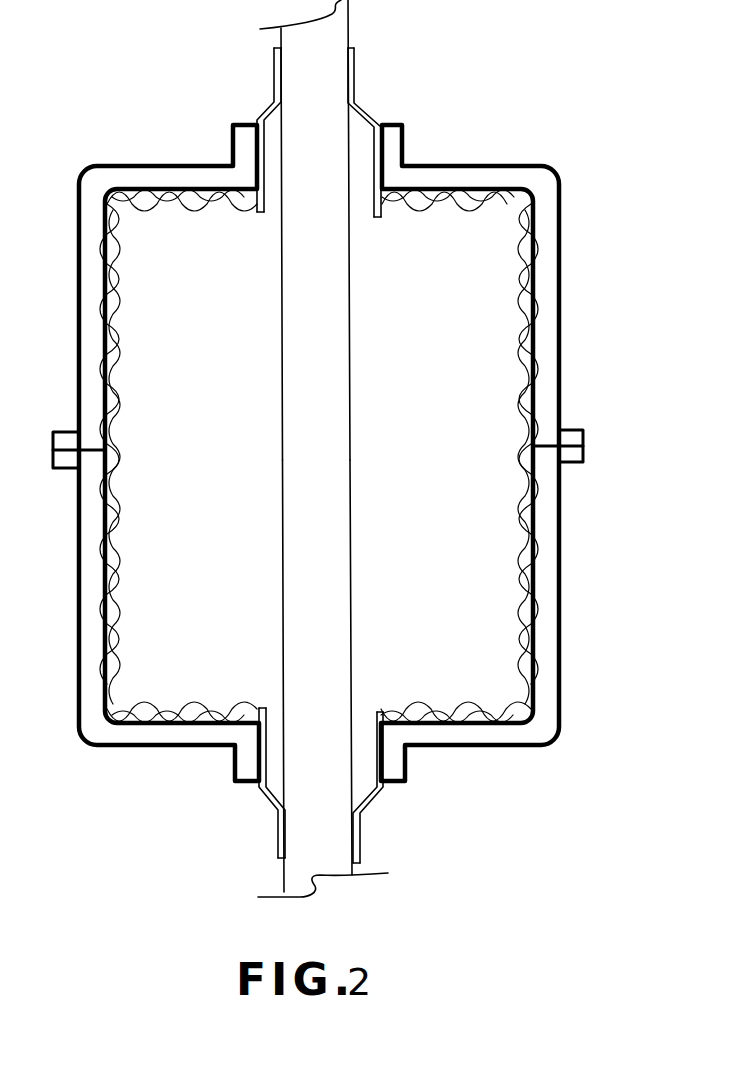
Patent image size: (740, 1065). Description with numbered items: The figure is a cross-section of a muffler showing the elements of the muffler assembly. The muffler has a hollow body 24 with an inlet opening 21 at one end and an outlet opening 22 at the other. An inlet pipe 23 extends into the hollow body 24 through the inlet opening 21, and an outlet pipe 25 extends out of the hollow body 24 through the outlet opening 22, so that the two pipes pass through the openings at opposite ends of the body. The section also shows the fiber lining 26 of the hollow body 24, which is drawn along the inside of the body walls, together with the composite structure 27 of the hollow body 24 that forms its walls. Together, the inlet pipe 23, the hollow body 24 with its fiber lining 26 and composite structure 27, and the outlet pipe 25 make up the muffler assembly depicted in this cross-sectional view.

The inlet opening 21 is at (358, 178).
The outlet opening 22 is at (365, 760).
The inlet pipe 23 is at (318, 138).
The hollow body 24 is at (453, 577).
The outlet pipe 25 is at (322, 797).
The fiber lining 26 is at (525, 353).
The composite structure 27 is at (547, 422).